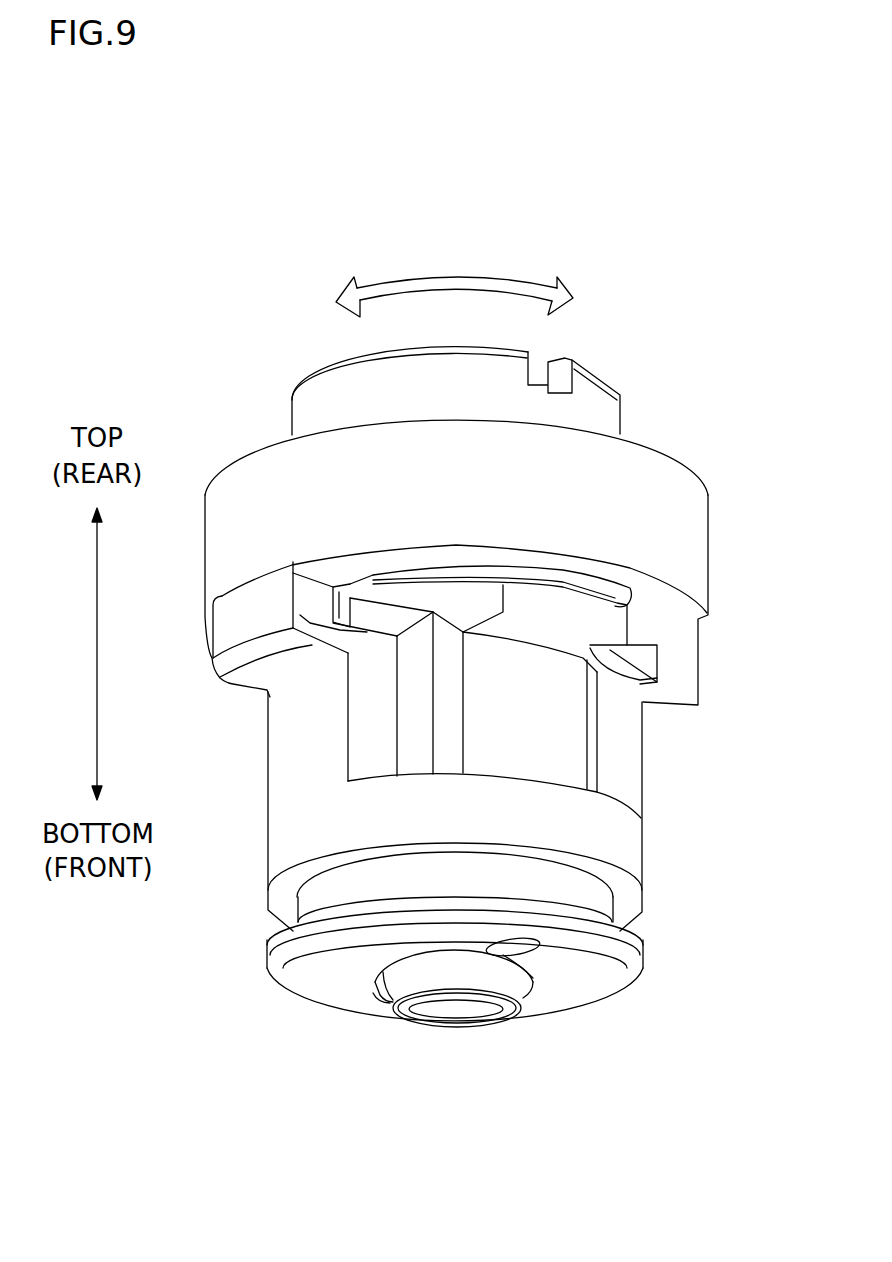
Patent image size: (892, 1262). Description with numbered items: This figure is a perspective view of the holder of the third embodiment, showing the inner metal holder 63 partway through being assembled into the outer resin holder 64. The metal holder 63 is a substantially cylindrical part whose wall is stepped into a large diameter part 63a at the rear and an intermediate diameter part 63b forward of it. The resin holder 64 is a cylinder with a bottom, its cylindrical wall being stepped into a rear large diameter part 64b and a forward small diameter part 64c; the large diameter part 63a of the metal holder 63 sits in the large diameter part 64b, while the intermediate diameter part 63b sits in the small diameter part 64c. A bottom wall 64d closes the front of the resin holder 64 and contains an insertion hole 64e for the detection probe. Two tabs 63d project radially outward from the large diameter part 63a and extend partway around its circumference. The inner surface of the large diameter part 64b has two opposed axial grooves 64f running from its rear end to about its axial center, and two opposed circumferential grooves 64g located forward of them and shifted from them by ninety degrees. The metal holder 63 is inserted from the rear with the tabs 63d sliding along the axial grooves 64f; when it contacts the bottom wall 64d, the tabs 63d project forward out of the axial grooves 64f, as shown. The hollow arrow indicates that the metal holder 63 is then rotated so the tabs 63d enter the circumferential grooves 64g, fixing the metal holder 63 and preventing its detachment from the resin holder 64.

The metal holder 63 is at (538, 556).
The large diameter part 63a is at (622, 421).
The intermediate diameter part 63b is at (563, 762).
The tabs 63d is at (617, 617).
The resin holder 64 is at (234, 451).
The large diameter part 64b is at (708, 546).
The small diameter part 64c is at (268, 823).
The bottom wall 64d is at (648, 958).
The insertion hole 64e is at (440, 1007).
The axial grooves 64f is at (630, 588).
The circumferential grooves 64g is at (300, 622).